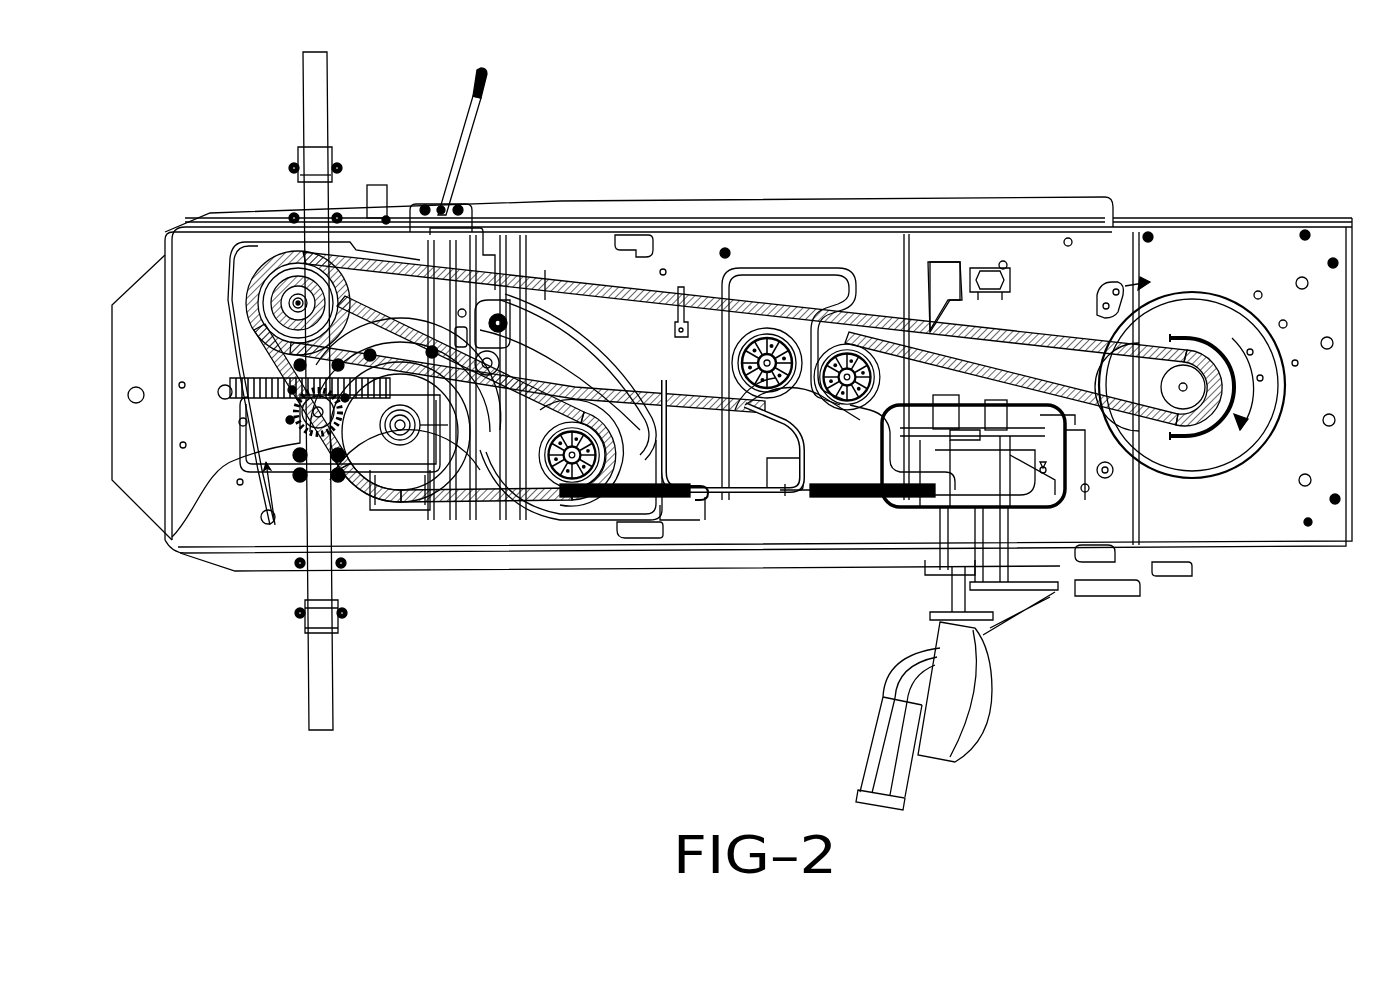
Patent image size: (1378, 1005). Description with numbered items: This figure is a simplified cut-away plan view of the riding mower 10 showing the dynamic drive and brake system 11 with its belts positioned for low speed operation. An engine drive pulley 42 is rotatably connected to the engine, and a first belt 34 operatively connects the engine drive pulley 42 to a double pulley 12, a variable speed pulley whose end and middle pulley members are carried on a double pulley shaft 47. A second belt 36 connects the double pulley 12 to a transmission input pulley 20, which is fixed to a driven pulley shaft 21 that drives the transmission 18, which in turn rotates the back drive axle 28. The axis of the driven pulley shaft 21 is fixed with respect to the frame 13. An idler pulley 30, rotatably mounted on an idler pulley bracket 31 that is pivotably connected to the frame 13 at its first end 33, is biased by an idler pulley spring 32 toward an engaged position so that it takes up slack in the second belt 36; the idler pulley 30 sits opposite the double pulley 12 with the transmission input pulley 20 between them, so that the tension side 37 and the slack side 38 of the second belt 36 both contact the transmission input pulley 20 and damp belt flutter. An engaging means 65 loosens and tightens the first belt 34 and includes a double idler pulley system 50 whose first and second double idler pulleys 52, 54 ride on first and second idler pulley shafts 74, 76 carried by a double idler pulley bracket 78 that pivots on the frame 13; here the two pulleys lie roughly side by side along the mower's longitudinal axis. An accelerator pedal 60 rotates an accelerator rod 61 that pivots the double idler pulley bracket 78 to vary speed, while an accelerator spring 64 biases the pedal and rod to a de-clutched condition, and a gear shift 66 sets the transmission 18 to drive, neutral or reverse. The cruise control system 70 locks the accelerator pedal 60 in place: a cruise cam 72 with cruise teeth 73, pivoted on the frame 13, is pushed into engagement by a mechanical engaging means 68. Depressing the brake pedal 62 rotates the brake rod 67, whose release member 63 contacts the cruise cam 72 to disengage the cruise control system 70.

The mower 10 is at (1002, 95).
The dynamic drive and brake system 11 is at (902, 104).
The double pulley 12 is at (283, 272).
The frame 13 is at (240, 570).
The transmission 18 is at (248, 441).
The transmission input pulley 20 is at (373, 448).
The driven pulley shaft 21 is at (410, 438).
The back drive axle 28 is at (318, 680).
The idler pulley 30 is at (552, 497).
The idler pulley bracket 31 is at (527, 357).
The idler pulley spring 32 is at (630, 495).
The first end 33 is at (512, 300).
The first belt 34 is at (547, 277).
The second belt 36 is at (514, 470).
The tension side 37 is at (172, 537).
The slack side 38 is at (387, 317).
The engine drive pulley 42 is at (1183, 400).
The double pulley shaft 47 is at (290, 300).
The double idler pulley system 50 is at (825, 275).
The first double idler pulley 52 is at (767, 360).
The second double idler pulley 54 is at (847, 362).
The accelerator pedal 60 is at (965, 742).
The accelerator rod 61 is at (950, 590).
The brake pedal 62 is at (895, 785).
The release member 63 is at (992, 518).
The accelerator spring 64 is at (842, 500).
The engaging means 65 is at (810, 618).
The gear shift 66 is at (472, 128).
The brake rod 67 is at (1038, 505).
The mechanical engaging means 68 is at (1165, 568).
The cruise control system 70 is at (1054, 522).
The cruise cam 72 is at (937, 520).
The cruise teeth 73 is at (973, 497).
The first idler pulley shaft 74 is at (742, 364).
The second idler pulley shaft 76 is at (905, 253).
The double idler pulley bracket 78 is at (745, 410).